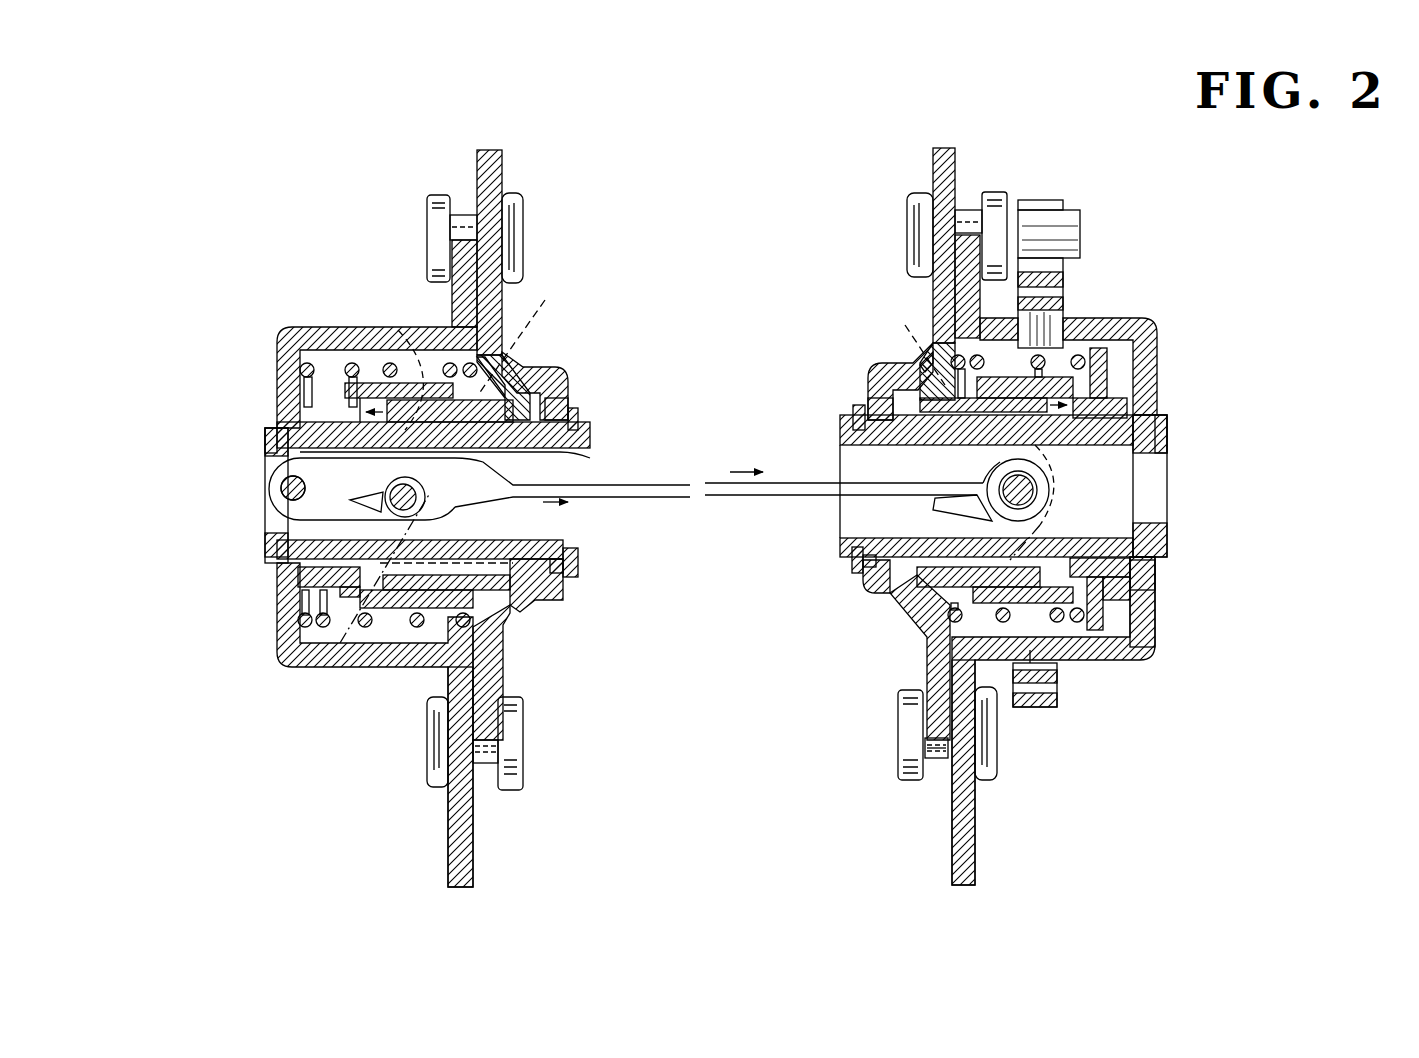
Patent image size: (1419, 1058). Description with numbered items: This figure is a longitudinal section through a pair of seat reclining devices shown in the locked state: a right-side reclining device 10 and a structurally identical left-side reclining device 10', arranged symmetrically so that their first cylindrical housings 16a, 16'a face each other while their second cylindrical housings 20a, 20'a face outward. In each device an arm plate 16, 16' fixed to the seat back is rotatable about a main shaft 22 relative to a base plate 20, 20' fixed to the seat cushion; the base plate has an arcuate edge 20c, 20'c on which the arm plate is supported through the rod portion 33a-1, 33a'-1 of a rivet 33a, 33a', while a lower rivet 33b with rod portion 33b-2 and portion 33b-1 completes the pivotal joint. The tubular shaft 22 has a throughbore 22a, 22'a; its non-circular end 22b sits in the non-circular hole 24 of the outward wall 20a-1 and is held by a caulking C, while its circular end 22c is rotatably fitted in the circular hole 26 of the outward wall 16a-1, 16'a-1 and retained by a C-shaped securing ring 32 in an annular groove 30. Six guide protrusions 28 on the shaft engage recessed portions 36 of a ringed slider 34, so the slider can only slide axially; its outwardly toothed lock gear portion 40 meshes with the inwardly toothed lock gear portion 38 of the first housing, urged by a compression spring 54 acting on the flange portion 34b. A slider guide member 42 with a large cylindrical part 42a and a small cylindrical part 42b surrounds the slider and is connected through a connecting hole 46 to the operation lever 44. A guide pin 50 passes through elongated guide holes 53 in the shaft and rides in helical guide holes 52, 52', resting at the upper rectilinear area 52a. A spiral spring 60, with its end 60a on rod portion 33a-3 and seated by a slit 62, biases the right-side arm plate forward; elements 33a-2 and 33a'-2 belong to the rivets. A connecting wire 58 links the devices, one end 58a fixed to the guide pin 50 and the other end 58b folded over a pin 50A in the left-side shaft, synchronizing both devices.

The reclining device 10 is at (975, 478).
The left-side reclining device 10' is at (386, 520).
The arm plate 16 is at (910, 272).
The arm plate 16' is at (535, 266).
The first cylindrical housing 16a is at (880, 372).
The first cylindrical housing 16'a is at (589, 362).
The outward wall 16a-1 is at (875, 398).
The outward wall 16'a-1 is at (625, 383).
The base plate 20 is at (1009, 772).
The base plate 20' is at (414, 777).
The second cylindrical housing 20a is at (1158, 652).
The second cylindrical housing 20'a is at (341, 725).
The outward wall 20a-1 is at (1160, 620).
The arcuate edge 20c is at (968, 295).
The arcuate edge 20'c is at (407, 283).
The main shaft 22 is at (717, 387).
The throughbore 22a is at (1168, 505).
The throughbore 22'a is at (226, 495).
The end of shaft 22b is at (1150, 437).
The end of shaft 22c is at (585, 420).
The non-circular hole 24 is at (272, 545).
The circular hole 26 is at (556, 553).
The guide protrusions 28 is at (545, 588).
The annular groove 30 is at (580, 562).
The C-shaped securing ring 32 is at (562, 590).
The rivet 33a is at (876, 225).
The ordinary rivet 33a' is at (557, 224).
The rod portion 33a-1 is at (967, 212).
The rod portion 33a'-1 is at (447, 169).
The roller 33a-2 is at (996, 192).
The roller (primed) 33a'-2 is at (386, 214).
The rod portion 33a-3 is at (1075, 230).
The rivet 33b is at (530, 752).
The lower roller pin 33b-1 is at (935, 748).
The rod portion 33b-2 is at (955, 765).
The ringed slider 34 is at (515, 622).
The flange portion 34b is at (497, 640).
The recessed portions 36 is at (575, 455).
The inwardly toothed lock gear portion 38 is at (520, 375).
The outwardly toothed lock gear portion 40 is at (711, 334).
The slider guide member 42 is at (385, 618).
The large cylindrical part 42a is at (998, 688).
The small cylindrical part 42b is at (296, 588).
The operation lever 44 is at (1118, 378).
The connecting hole 46 is at (1118, 405).
The guide pin 50 is at (420, 505).
The pin 50A is at (283, 480).
The first helical guide hole 52 is at (699, 610).
The second helical guide hole 52' is at (729, 403).
The upper rectilinear area 52a is at (412, 383).
The longitudinally elongated guide holes 53 is at (367, 490).
The compression spring 54 is at (300, 598).
The connecting wire 58 is at (740, 492).
The end of connecting wire 58a is at (935, 508).
The end of connecting wire 58b is at (432, 495).
The spiral spring 60 is at (1057, 712).
The end of spiral spring 60a is at (1050, 208).
The slit 62 is at (1062, 335).
The caulking C is at (270, 432).